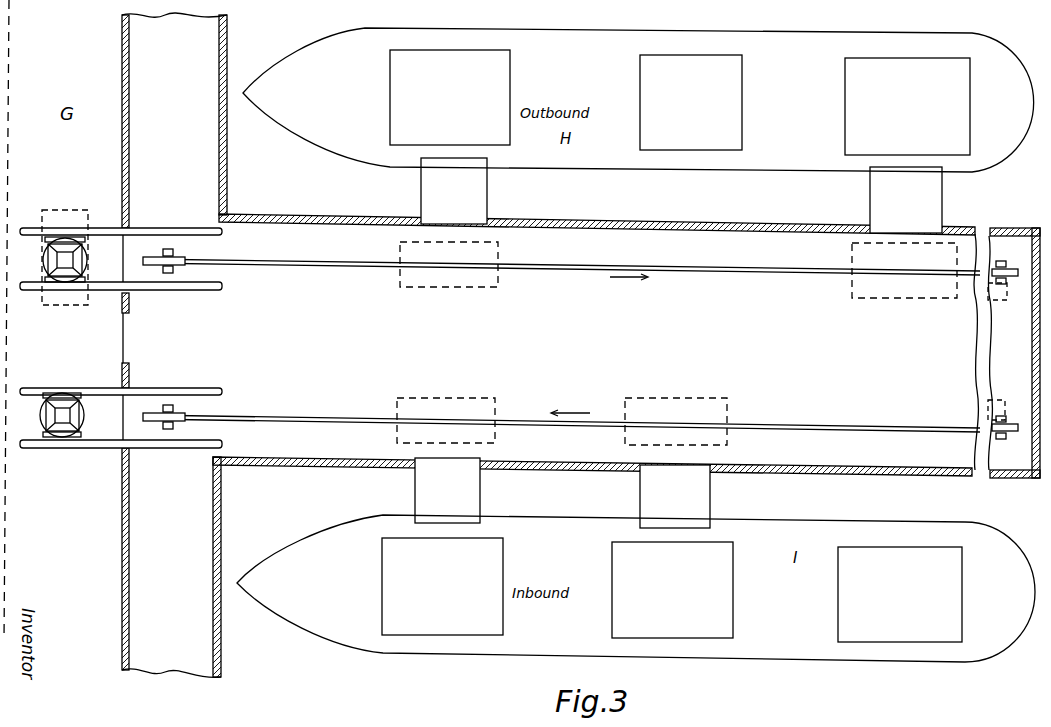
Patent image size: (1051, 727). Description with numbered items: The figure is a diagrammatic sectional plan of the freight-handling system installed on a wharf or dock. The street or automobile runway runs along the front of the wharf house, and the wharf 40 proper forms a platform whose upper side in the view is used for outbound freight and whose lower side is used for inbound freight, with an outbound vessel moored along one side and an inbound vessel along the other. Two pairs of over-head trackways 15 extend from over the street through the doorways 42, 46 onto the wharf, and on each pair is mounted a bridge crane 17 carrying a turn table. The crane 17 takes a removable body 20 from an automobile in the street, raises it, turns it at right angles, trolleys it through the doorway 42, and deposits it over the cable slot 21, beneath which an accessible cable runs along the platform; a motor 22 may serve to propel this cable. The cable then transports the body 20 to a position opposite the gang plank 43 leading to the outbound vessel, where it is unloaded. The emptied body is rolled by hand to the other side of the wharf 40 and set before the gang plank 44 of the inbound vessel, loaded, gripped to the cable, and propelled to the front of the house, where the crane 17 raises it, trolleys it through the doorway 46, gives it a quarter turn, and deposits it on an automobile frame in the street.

The over-head trackways 15 is at (111, 237).
The bridge crane 17 is at (42, 262).
The removable bodies 20 is at (498, 283).
The cable slot 21 is at (365, 267).
The motor 22 is at (998, 300).
The wharf 40 is at (599, 345).
The doorway 42 is at (130, 228).
The gang plank 43 is at (597, 196).
The gang plank 44 is at (592, 492).
The doorway 46 is at (128, 386).